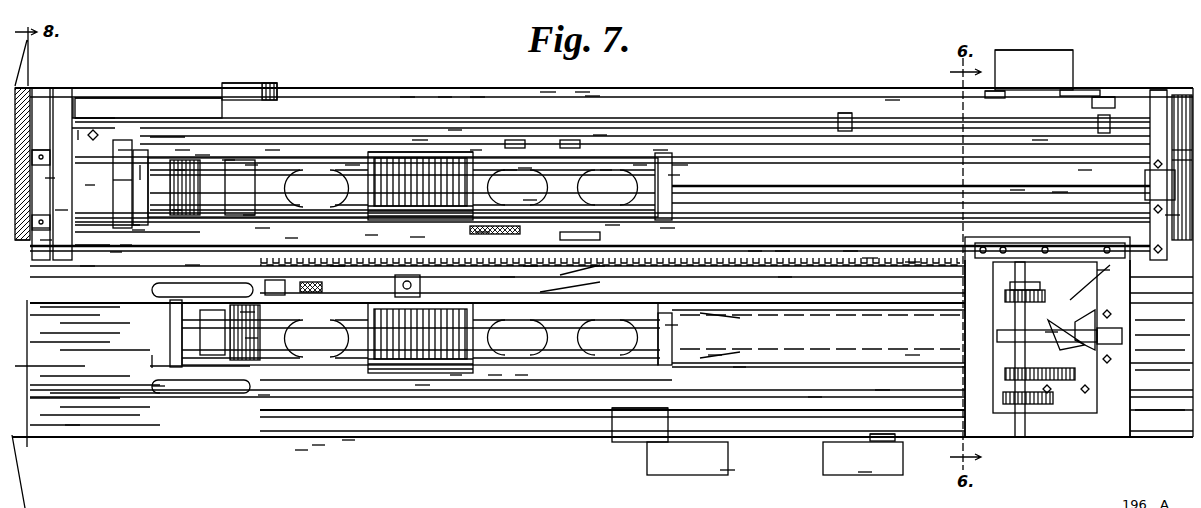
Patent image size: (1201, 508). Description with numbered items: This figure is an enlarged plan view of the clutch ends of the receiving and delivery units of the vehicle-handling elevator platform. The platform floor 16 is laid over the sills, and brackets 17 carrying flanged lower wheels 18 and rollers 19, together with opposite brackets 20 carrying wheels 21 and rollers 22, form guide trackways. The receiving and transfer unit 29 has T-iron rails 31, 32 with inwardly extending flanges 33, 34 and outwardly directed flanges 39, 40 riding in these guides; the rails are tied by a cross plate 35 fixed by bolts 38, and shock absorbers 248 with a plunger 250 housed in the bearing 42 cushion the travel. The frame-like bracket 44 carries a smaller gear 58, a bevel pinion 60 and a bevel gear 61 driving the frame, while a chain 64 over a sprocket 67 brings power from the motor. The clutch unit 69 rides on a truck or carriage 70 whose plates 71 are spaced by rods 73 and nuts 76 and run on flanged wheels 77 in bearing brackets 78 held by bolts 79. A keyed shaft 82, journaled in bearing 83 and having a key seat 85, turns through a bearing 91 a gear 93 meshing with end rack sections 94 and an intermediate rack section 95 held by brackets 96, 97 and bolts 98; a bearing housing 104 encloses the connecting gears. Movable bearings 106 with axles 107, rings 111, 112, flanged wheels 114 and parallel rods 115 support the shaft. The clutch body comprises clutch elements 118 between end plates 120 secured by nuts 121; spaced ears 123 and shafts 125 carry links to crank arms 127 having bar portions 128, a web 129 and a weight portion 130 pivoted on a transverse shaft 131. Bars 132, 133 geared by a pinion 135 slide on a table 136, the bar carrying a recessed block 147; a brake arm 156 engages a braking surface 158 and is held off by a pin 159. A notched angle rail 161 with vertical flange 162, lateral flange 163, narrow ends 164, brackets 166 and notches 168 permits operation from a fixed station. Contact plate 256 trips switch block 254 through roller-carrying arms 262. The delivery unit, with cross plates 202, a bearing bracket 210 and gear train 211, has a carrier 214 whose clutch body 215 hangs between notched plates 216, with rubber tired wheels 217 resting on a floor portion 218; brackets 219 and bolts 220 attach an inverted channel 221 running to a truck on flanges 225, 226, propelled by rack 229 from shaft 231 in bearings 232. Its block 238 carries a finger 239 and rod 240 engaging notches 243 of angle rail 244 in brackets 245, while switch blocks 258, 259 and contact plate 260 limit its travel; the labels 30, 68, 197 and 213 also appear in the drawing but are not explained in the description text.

The floor 16 is at (893, 100).
The brackets 17 is at (550, 92).
The flanged lower wheels 18 is at (45, 240).
The rollers 19 is at (583, 92).
The brackets 20 is at (300, 452).
The wheels 21 is at (348, 440).
The rollers 22 is at (318, 446).
The receiving and transfer unit 29 is at (478, 97).
The lower shaft 30 is at (422, 386).
The T-iron rail 31 is at (73, 107).
The T-iron rail 32 is at (83, 267).
The inwardly extending flange 33 is at (163, 137).
The inwardly extending flange 34 is at (125, 247).
The cross plate 35 is at (80, 135).
The bolts 38 is at (93, 130).
The outwardly directed flange 39 is at (153, 100).
The outwardly directed flange 40 is at (138, 232).
The bearing 42 is at (41, 235).
The frame-like bracket 44 is at (1163, 100).
The smaller gear 58 is at (1178, 150).
The bevel pinion 60 is at (1178, 160).
The bevel gear 61 is at (1170, 215).
The chain 64 is at (41, 146).
The sprocket 67 is at (21, 250).
The shaft 68 is at (720, 176).
The clutch unit 69 is at (420, 140).
The truck or carriage 70 is at (680, 165).
The plates 71 is at (228, 160).
The rods 73 is at (675, 176).
The nuts 76 is at (668, 228).
The flanged wheels 77 is at (183, 150).
The bearing brackets 78 is at (200, 155).
The bolts 79 is at (660, 150).
The shaft 82 is at (1015, 190).
The bearing 83 is at (90, 185).
The key seat 85 is at (1058, 192).
The bearing 91 is at (455, 130).
The gear 93 is at (445, 97).
The end rack sections 94 is at (408, 97).
The intermediate rack section 95 is at (1040, 140).
The bracket 96 is at (600, 135).
The bracket 97 is at (876, 119).
The bolts 98 is at (1100, 120).
The bearing housing 104 is at (125, 150).
The movable bearings 106 is at (180, 170).
The axle 107 is at (178, 211).
The ring 111 is at (128, 172).
The ring 112 is at (142, 172).
The flanged wheels 114 is at (116, 254).
The parallel rods 115 is at (1085, 170).
The clutch elements 118 is at (385, 152).
The end plates 120 is at (475, 150).
The nuts 121 is at (510, 170).
The spaced ears 123 is at (352, 165).
The shafts 125 is at (525, 168).
The arm 127 is at (272, 150).
The bar portions 128 is at (248, 165).
The web 129 is at (262, 228).
The weight portion 130 is at (640, 165).
The transverse shaft 131 is at (617, 172).
The bar 132 is at (368, 236).
The bar 133 is at (480, 232).
The gear pinion 135 is at (420, 237).
The horizontal plate or table 136 is at (245, 218).
The recessed block 147 is at (508, 278).
The brake arm 156 is at (612, 225).
The braking surface 158 is at (530, 200).
The pin 159 is at (530, 266).
The rail 161 is at (760, 240).
The vertical flange 162 is at (855, 240).
The lateral flange 163 is at (870, 258).
The narrow ends 164 is at (292, 240).
The brackets 166 is at (190, 268).
The notches 168 is at (782, 251).
The bracket 197 is at (940, 303).
The cross plates 202 is at (262, 396).
The bearing bracket 210 is at (1100, 275).
The gear train 211 is at (1050, 332).
The carriage 213 is at (150, 358).
The carrier 214 is at (522, 376).
The clutch body 215 is at (455, 376).
The notched plates 216 is at (495, 376).
The rubber tired wheels 217 is at (155, 392).
The floor portion 218 is at (73, 425).
The brackets 219 is at (715, 355).
The bolts 220 is at (740, 367).
The inverted channel 221 is at (912, 355).
The inwardly directed flange 225 is at (895, 303).
The inwardly directed flange 226 is at (815, 397).
The rack 229 is at (882, 390).
The shaft 231 is at (672, 325).
The bearings 232 is at (248, 342).
The block 238 is at (245, 315).
The pin or finger 239 is at (335, 266).
The rod 240 is at (905, 303).
The notches 243 is at (785, 278).
The angle rail 244 is at (912, 262).
The brackets 245 is at (598, 266).
The shock absorbers 248 is at (50, 178).
The plunger 250 is at (60, 212).
The switch block 254 is at (1068, 60).
The contact plate 256 is at (262, 90).
The switch block 258 is at (728, 470).
The switch block 259 is at (865, 472).
The contact plate 260 is at (632, 430).
The roller-carrying arms 262 is at (1000, 100).